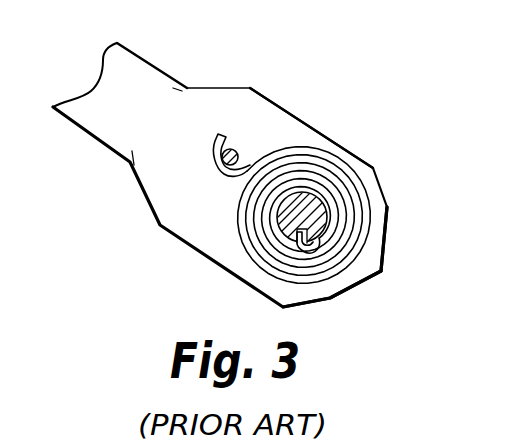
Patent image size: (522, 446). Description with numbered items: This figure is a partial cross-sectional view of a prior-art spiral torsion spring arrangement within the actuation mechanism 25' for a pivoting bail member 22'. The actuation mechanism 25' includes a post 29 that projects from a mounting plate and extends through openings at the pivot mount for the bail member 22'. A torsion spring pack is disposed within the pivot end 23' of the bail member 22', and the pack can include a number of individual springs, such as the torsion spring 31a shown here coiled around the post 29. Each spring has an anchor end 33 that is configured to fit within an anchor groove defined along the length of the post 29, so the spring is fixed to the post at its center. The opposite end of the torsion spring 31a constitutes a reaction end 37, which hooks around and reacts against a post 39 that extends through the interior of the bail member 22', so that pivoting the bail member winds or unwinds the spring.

The bail member 22' is at (220, 159).
The pivot end 23' is at (335, 309).
The actuation mechanism 25' is at (318, 128).
The torsion spring 31a is at (386, 209).
The post 29 is at (288, 226).
The anchor end 33 is at (293, 250).
The reaction end 37 is at (213, 142).
The post 39 is at (230, 149).